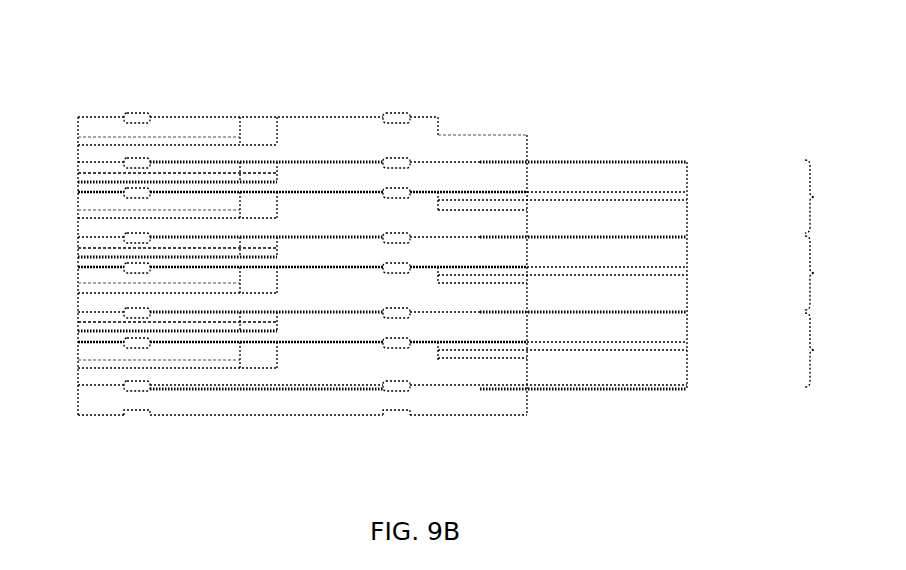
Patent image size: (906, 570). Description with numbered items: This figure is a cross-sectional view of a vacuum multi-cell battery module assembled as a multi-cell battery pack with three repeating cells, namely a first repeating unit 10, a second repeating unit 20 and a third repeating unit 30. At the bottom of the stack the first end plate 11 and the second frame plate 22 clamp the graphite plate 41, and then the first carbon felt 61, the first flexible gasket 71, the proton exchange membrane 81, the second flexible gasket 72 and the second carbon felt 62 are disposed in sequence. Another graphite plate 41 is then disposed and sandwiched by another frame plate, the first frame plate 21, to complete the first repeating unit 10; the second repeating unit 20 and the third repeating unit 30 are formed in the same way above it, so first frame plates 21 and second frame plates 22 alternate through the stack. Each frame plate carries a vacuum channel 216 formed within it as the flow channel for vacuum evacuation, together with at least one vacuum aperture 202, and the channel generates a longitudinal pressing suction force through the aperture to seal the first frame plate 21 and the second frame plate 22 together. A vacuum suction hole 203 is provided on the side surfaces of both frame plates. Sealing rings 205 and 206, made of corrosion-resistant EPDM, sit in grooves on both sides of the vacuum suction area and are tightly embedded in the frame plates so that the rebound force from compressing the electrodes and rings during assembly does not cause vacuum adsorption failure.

The vacuum suction sealing ring 205 is at (135, 113).
The vacuum suction sealing ring 206 is at (400, 113).
The second frame plate 22 is at (70, 118).
The first frame plate 21 is at (70, 155).
The first end plate 11 is at (70, 382).
The vacuum suction hole 203 is at (83, 363).
The vacuum channel 216 is at (150, 363).
The vacuum aperture 202 is at (265, 350).
The first flexible gasket 71 is at (458, 353).
The second flexible gasket 72 is at (530, 363).
The graphite plate 41 is at (665, 165).
The second carbon felt 62 is at (653, 184).
The proton exchange membrane 81 is at (660, 200).
The first carbon felt 61 is at (653, 222).
The third repeating unit 30 is at (832, 196).
The second repeating unit 20 is at (832, 273).
The first repeating unit 10 is at (832, 350).